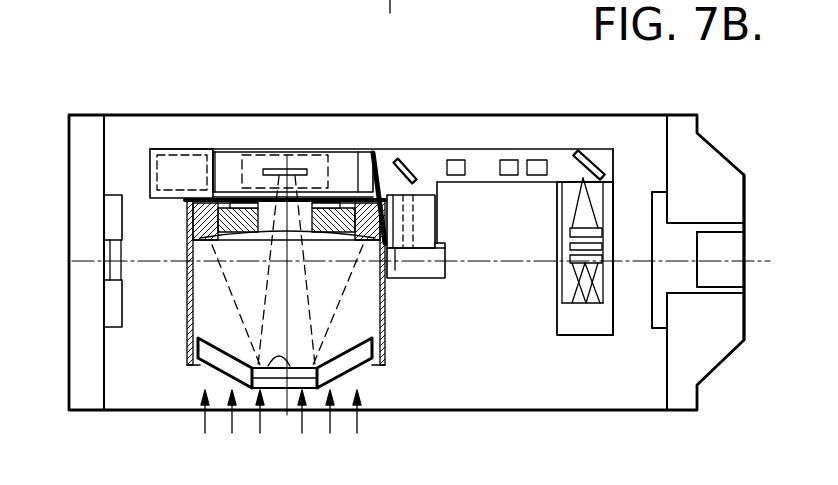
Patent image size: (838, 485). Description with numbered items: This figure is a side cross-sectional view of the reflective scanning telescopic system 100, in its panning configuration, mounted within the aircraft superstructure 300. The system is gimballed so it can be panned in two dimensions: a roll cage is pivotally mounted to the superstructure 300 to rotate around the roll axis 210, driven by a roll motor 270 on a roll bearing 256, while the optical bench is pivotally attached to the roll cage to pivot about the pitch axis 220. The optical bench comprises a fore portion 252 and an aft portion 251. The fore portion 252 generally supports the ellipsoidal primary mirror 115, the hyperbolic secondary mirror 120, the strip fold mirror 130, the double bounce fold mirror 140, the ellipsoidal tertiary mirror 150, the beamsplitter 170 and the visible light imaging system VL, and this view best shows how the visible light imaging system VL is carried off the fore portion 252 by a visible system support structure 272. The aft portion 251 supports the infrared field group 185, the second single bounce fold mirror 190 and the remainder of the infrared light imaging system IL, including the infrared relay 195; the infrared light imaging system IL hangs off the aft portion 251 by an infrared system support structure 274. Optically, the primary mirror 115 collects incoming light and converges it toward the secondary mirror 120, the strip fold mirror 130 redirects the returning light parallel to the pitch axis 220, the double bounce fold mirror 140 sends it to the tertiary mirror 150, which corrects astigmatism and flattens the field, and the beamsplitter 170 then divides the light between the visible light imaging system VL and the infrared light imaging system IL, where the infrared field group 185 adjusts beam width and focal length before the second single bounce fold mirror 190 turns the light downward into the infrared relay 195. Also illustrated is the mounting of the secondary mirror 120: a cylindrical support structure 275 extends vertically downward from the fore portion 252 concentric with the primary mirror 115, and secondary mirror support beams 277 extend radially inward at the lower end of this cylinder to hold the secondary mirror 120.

The reflective scanning telescopic system 100 is at (124, 89).
The aircraft superstructure 300 is at (83, 168).
The ellipsoidal tertiary mirror 150 is at (173, 157).
The fore portion 252 is at (222, 158).
The double bounce fold mirror 140 is at (262, 165).
The strip fold mirror 130 is at (300, 155).
The pitch axis 220 is at (372, 150).
The beamsplitter 170 is at (412, 163).
The infrared field group 185 is at (553, 122).
The second single bounce fold mirror 190 is at (587, 150).
The aft portion 251 is at (618, 147).
The roll motor 270 is at (748, 242).
The roll axis 210 is at (762, 250).
The ellipsoidal primary mirror 115 is at (250, 242).
The cylindrical support structure 275 is at (187, 307).
The roll bearing 256 is at (122, 287).
The secondary mirror support beams 277 is at (222, 360).
The visible system support structure 272 is at (392, 222).
The infrared relay 195 is at (580, 221).
The infrared system support structure 274 is at (557, 294).
The visible light imaging system VL is at (413, 264).
The infrared light imaging system IL is at (592, 320).
The hyperbolic secondary mirror 120 is at (275, 355).